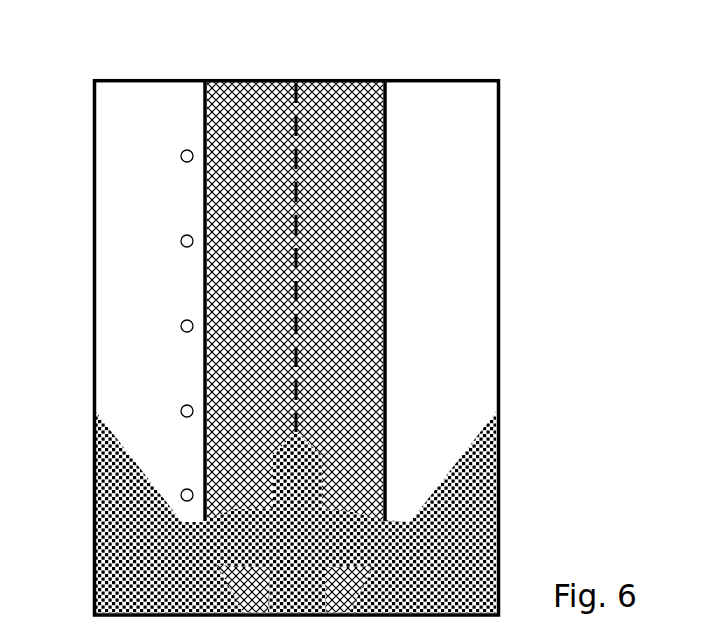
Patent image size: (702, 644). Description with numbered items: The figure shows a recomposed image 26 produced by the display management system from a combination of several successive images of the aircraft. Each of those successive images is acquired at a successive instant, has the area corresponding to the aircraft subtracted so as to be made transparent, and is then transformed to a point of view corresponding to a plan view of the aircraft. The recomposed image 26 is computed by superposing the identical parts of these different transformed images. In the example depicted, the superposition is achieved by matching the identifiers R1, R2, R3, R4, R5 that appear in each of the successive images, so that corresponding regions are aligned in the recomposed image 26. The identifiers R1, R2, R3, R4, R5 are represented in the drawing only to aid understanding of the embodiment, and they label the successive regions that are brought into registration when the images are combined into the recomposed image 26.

The recomposed image 26 is at (65, 83).
The identifier R1 is at (181, 495).
The identifier R2 is at (181, 411).
The identifier R3 is at (181, 326).
The identifier R4 is at (181, 241).
The identifier R5 is at (181, 156).